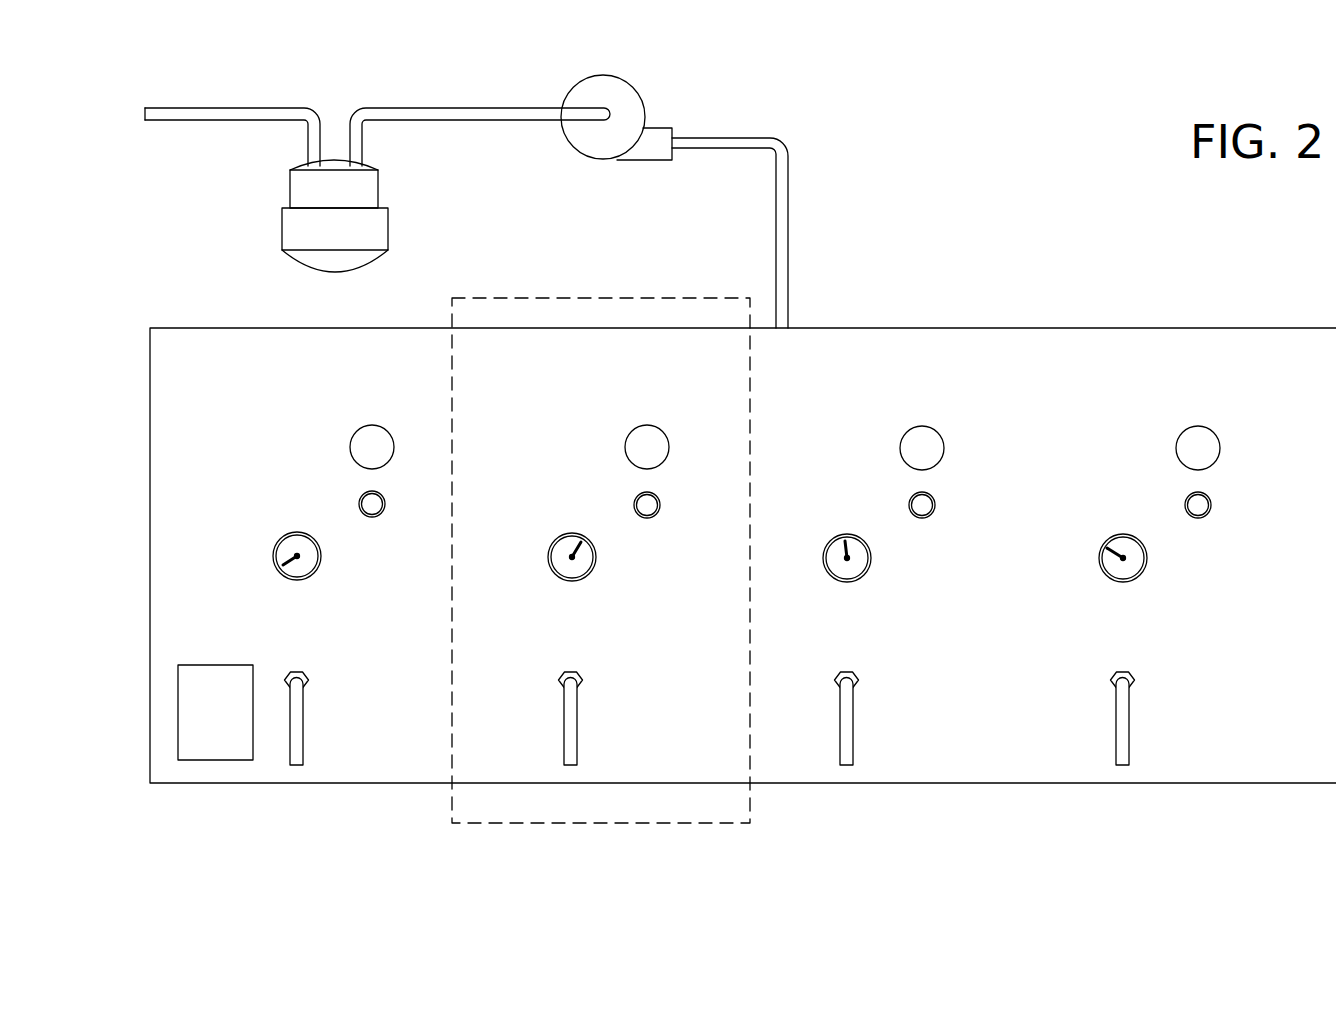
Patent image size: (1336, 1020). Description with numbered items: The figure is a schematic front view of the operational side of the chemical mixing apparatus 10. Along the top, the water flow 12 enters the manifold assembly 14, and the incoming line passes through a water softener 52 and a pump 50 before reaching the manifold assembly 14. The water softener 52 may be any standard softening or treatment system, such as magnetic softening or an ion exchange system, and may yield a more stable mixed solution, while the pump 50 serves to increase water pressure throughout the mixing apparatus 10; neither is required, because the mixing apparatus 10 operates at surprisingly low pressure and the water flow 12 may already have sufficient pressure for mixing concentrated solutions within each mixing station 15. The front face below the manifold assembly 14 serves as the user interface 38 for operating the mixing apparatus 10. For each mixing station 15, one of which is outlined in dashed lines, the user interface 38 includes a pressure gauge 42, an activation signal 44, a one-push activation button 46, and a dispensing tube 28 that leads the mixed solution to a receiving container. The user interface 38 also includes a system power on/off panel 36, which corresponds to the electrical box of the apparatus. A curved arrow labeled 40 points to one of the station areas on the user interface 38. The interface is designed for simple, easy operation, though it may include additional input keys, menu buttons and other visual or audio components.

The mixing apparatus 10 is at (928, 100).
The water flow 12 is at (132, 116).
The manifold assembly 14 is at (788, 223).
The mixing station 15 is at (563, 298).
The dispensing tube 28 is at (578, 732).
The system power on/off panel 36 is at (232, 722).
The user interface 38 is at (1060, 328).
The dispensing station 40 is at (820, 394).
The pressure gauge 42 is at (550, 542).
The activation signal 44 is at (659, 510).
The one-push activation button 46 is at (667, 432).
The pump 50 is at (638, 82).
The water softener 52 is at (290, 215).